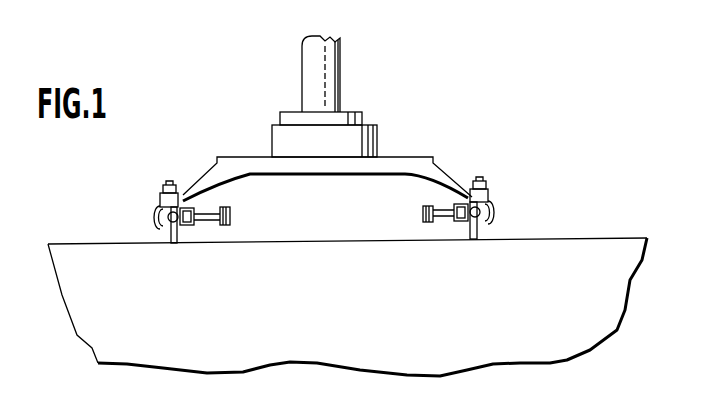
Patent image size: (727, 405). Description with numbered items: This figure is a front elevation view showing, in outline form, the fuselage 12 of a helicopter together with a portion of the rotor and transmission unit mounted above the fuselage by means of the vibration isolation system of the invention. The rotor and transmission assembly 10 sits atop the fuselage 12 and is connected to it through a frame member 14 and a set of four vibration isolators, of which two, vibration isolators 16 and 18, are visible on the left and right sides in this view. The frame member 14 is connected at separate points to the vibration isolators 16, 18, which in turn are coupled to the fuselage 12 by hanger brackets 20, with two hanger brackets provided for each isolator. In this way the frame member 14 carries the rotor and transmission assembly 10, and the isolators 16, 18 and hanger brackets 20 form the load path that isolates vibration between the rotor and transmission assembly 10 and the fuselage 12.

The rotor and transmission assembly 10 is at (370, 135).
The fuselage 12 is at (620, 262).
The frame member 14 is at (448, 176).
The vibration isolator 16 is at (151, 212).
The vibration isolator 18 is at (499, 206).
The hanger brackets 20 is at (182, 232).